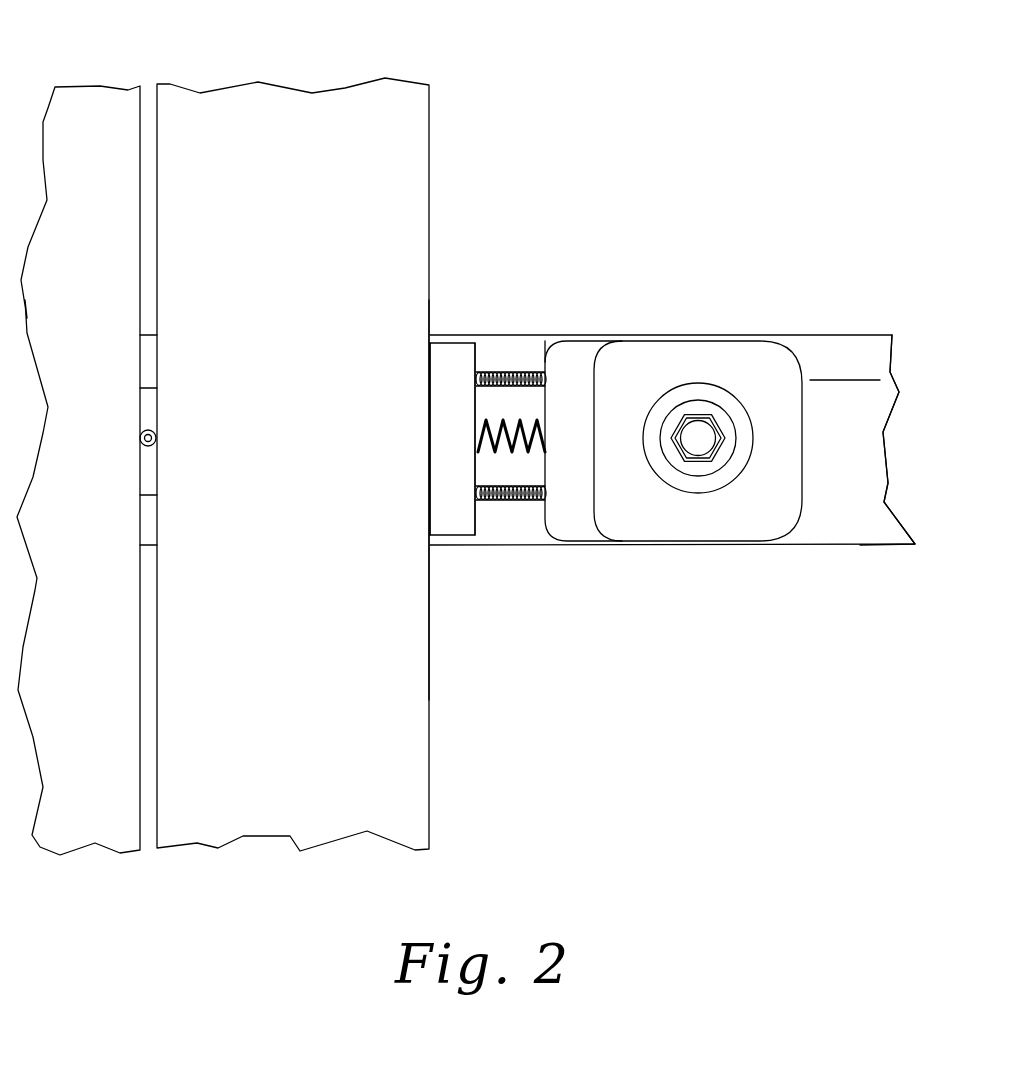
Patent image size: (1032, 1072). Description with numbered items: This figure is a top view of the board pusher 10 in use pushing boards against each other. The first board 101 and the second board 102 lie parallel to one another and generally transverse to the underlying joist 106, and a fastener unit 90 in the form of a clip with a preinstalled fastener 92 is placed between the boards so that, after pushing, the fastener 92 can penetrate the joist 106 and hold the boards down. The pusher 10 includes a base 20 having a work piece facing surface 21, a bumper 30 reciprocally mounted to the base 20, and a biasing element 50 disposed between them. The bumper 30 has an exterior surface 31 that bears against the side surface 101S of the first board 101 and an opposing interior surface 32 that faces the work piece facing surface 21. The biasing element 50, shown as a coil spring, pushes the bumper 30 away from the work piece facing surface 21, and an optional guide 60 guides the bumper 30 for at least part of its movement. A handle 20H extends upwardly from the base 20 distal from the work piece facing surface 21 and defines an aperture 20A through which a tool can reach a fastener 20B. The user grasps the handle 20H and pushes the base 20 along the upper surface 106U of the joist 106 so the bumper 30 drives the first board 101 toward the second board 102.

The board pusher 10 is at (673, 431).
The base 20 is at (575, 545).
The aperture 20A is at (725, 388).
The fastener 20B is at (697, 420).
The handle 20H is at (703, 348).
The work piece facing surface 21 is at (545, 352).
The bumper 30 is at (445, 510).
The exterior surface 31 is at (430, 377).
The interior surface 32 is at (478, 372).
The biasing element 50 is at (506, 452).
The guide 60 is at (545, 383).
The fastener unit 90 is at (149, 462).
The fastener 92 is at (152, 432).
The first board 101 is at (431, 750).
The side surface 101S is at (430, 657).
The second board 102 is at (145, 735).
The underlying joist 106 is at (858, 545).
The upper surface 106U is at (817, 500).